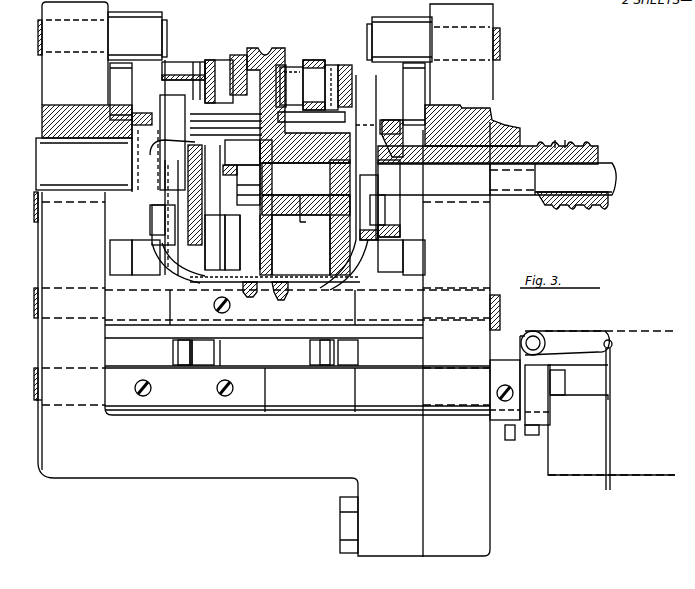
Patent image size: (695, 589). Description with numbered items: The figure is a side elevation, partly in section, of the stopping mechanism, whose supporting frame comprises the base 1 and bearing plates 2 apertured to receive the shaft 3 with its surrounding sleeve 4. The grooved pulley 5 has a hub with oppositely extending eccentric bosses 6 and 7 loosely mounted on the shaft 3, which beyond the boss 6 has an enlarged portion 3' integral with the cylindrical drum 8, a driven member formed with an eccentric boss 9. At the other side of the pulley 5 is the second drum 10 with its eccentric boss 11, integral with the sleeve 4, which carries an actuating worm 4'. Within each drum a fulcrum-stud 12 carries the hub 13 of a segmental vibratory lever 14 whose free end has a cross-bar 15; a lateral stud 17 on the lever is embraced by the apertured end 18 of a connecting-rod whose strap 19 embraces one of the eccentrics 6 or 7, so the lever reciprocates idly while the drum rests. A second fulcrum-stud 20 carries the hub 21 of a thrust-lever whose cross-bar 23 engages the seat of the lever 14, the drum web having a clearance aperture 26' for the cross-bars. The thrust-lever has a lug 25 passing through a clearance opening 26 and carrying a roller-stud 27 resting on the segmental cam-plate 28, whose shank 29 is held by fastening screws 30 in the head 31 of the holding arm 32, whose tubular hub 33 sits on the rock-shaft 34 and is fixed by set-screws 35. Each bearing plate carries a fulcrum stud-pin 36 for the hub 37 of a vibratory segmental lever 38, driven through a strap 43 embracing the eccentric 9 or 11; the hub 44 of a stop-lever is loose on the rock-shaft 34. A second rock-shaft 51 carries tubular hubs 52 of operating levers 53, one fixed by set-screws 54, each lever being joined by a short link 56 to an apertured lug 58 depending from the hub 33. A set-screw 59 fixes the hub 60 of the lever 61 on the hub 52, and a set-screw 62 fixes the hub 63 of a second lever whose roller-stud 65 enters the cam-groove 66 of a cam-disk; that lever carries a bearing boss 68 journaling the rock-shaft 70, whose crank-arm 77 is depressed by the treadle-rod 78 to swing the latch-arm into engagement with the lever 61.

The base 1 is at (230, 445).
The bearing plates 2 is at (262, 339).
The shaft 3 is at (439, 189).
The enlarged portion 3' is at (84, 147).
The sleeve 4 is at (493, 165).
The actuating worm 4' is at (566, 134).
The grooved pulley 5 is at (254, 58).
The eccentric boss 6 is at (212, 150).
The eccentric boss 7 is at (312, 218).
The cylindrical drum 8 is at (190, 150).
The eccentric boss 9 is at (148, 126).
The second drum 10 is at (331, 65).
The eccentric boss 11 is at (390, 120).
The fulcrum-stud 12 is at (212, 242).
The hub 13 is at (252, 260).
The segmental vibratory lever 14 is at (214, 207).
The cross-bar 15 is at (242, 152).
The lateral stud 17 is at (238, 164).
The apertured end 18 is at (248, 185).
The strap 19 is at (287, 207).
The second fulcrum-stud 20 is at (282, 66).
The hub 21 is at (291, 86).
The cross-bar 23 is at (248, 114).
The lug 25 is at (314, 30).
The clearance opening 26 is at (201, 70).
The clearance aperture 26' is at (168, 146).
The roller-stud 27 is at (178, 62).
The segmental cam-plate 28 is at (268, 157).
The shank 29 is at (266, 257).
The fastening screws 30 is at (152, 206).
The head 31 is at (267, 210).
The holding arm 32 is at (260, 265).
The tubular hub 33 is at (297, 301).
The rock-shaft 34 is at (240, 337).
The set-screws 35 is at (212, 302).
The fulcrum stud-pin 36 is at (100, 18).
The hub 37 is at (270, 37).
The vibratory segmental lever 38 is at (267, 169).
The strap 43 is at (142, 114).
The hub 44 is at (264, 318).
The rock-shaft 51 is at (38, 400).
The tubular hubs 52 is at (297, 390).
The operating levers 53 is at (184, 366).
The set-screws 54 is at (233, 389).
The short link 56 is at (214, 356).
The apertured lug 58 is at (173, 352).
The set-screw 59 is at (497, 393).
The hub 60 is at (504, 360).
The lever 61 is at (509, 440).
The set-screw 62 is at (532, 436).
The hub 63 is at (537, 395).
The roller-stud 65 is at (565, 395).
The cam-groove 66 is at (612, 376).
The bearing boss 68 is at (548, 330).
The rock-shaft 70 is at (533, 343).
The crank-arm 77 is at (549, 378).
The treadle-rod 78 is at (610, 420).